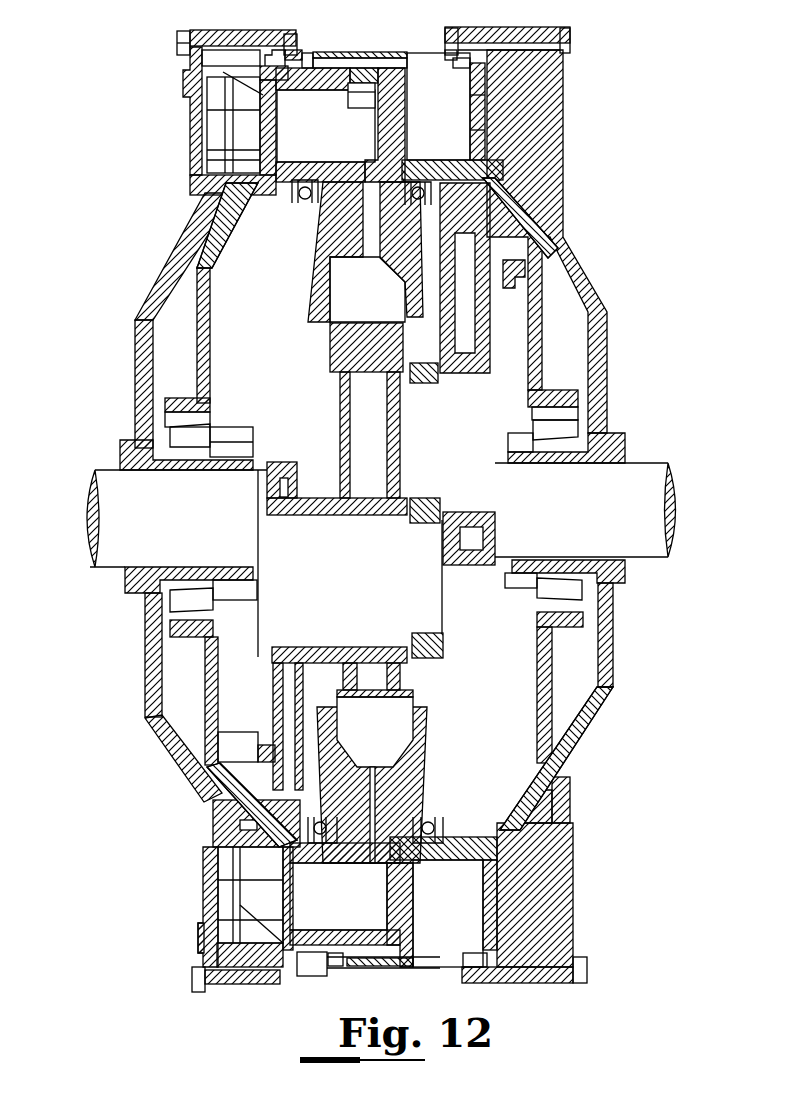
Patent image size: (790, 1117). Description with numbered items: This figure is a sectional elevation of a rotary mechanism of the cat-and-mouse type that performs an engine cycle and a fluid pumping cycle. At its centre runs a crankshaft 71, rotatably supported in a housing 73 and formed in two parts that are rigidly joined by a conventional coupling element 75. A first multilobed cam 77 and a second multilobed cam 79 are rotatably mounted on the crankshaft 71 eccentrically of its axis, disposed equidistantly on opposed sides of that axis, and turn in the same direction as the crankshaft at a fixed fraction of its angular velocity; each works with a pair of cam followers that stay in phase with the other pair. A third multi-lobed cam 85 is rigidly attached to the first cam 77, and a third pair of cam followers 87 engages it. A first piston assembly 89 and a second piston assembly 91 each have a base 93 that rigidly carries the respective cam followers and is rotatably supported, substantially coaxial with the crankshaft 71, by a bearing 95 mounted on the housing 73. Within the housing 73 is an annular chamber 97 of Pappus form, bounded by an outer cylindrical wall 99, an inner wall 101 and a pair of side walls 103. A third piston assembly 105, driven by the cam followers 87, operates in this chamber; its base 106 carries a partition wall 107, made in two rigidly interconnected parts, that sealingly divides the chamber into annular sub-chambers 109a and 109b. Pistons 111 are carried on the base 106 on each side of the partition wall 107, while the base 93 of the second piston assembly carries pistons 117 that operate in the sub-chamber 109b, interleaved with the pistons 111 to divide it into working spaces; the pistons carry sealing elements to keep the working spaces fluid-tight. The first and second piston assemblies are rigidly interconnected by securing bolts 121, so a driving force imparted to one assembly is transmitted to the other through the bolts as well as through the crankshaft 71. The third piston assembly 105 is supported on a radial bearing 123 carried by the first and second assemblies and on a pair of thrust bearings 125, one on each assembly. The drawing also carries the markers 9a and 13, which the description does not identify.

The plate 9a is at (300, 68).
The section line 13- 13 is at (55, 150).
The crankshaft 71 is at (103, 498).
The housing 73 is at (135, 352).
The coupling element 75 is at (433, 657).
The first multilobed cam 77 is at (215, 803).
The second multilobed cam 79 is at (505, 307).
The third multi-lobed cam 85 is at (340, 392).
The third pair of cam followers 87 is at (347, 302).
The first piston assembly 89 is at (267, 130).
The second piston assembly 91 is at (503, 110).
The base 93 is at (200, 267).
The bearing 95 is at (173, 433).
The annular chamber 97 is at (454, 72).
The outer cylindrical wall 99 is at (350, 960).
The inner wall 101 is at (225, 158).
The side walls 103 is at (227, 110).
The third piston assembly 105 is at (490, 248).
The base 106 is at (535, 162).
The partition wall 107 is at (420, 80).
The annular sub-chamber 109a is at (232, 72).
The annular sub-chamber 109b is at (460, 60).
The pistons 111 is at (200, 925).
The pistons 117 is at (500, 923).
The securing bolts 121 is at (333, 52).
The radial bearing 123 is at (360, 85).
The thrust bearings 125 is at (302, 203).